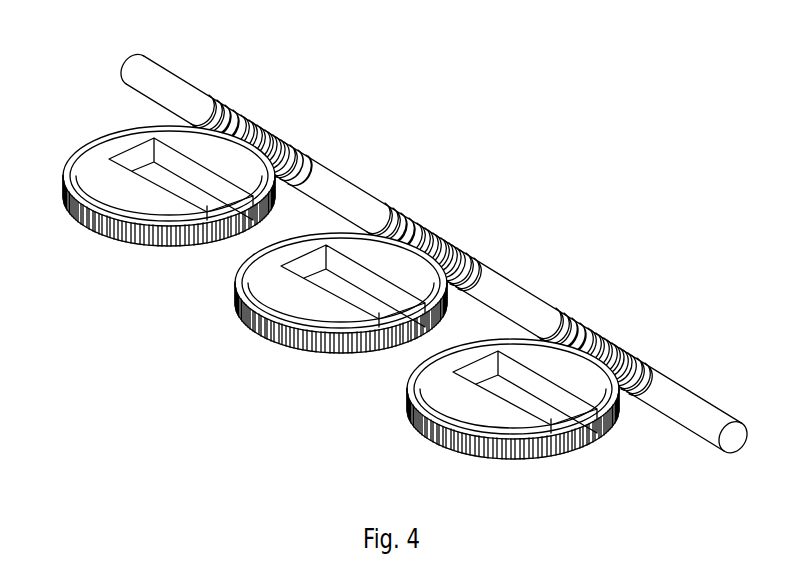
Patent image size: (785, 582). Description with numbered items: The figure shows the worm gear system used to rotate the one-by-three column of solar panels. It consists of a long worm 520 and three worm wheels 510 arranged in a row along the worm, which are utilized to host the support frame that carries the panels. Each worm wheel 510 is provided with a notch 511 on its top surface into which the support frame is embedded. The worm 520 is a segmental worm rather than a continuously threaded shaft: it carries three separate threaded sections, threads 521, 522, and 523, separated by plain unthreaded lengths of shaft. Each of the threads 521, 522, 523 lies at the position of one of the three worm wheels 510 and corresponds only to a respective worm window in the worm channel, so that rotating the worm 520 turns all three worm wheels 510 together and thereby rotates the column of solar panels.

The worm wheel 510 is at (267, 203).
The notch 511 is at (158, 183).
The worm 520 is at (142, 65).
The thread 521 is at (253, 123).
The thread 522 is at (440, 235).
The thread 523 is at (598, 340).